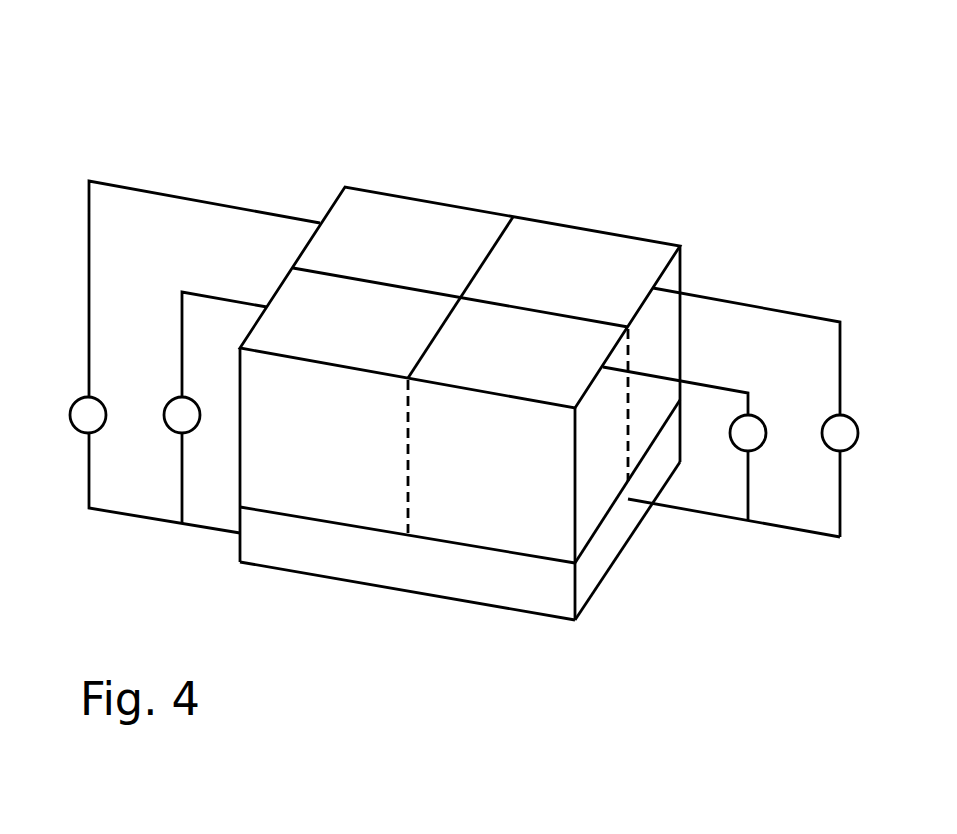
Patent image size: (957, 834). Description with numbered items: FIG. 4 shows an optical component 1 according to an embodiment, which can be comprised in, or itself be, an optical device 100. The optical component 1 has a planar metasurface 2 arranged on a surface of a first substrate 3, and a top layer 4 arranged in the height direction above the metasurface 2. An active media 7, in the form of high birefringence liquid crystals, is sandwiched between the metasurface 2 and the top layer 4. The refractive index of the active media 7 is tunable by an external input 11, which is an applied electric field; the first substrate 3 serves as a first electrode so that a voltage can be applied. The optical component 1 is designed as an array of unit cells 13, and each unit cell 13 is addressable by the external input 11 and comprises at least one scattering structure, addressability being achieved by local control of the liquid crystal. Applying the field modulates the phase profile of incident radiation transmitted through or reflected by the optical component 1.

The optical component 1 is at (425, 346).
The optical device 100 is at (425, 346).
The planar metasurface 2 is at (253, 480).
The first substrate 3 is at (300, 556).
The top layer 4 is at (422, 198).
The active media 7 is at (512, 527).
The external input 11 is at (88, 320).
The unit cell 13 is at (358, 205).